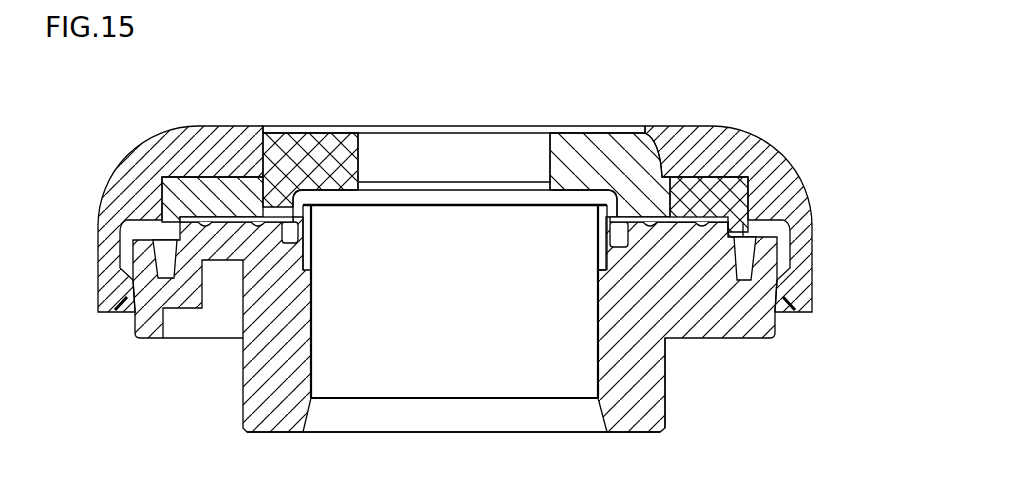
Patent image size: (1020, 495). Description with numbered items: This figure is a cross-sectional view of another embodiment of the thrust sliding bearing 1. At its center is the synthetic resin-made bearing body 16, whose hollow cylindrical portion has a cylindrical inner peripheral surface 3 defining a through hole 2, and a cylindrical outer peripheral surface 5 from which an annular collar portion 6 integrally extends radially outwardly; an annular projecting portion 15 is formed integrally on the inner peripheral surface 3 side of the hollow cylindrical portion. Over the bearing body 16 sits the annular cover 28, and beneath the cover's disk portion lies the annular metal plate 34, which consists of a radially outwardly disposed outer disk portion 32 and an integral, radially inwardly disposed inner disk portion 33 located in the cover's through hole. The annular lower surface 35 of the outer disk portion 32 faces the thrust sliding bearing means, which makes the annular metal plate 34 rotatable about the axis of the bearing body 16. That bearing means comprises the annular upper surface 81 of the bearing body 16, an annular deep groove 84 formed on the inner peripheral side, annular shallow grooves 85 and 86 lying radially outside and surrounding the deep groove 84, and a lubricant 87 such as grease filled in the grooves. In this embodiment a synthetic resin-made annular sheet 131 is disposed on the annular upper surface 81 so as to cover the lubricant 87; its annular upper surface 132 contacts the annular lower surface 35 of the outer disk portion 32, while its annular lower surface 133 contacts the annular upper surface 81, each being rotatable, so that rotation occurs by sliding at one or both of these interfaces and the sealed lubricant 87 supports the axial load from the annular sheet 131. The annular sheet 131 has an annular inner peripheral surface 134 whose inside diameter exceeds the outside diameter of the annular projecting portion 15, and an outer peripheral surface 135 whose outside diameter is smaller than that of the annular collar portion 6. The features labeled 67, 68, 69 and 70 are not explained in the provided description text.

The thrust sliding bearing 1 is at (674, 403).
The through hole 2 is at (433, 355).
The cylindrical inner peripheral surface 3 is at (312, 356).
The cylindrical outer peripheral surface 5 is at (666, 366).
The annular collar portion 6 is at (697, 285).
The annular projecting portion 15 is at (603, 210).
The bearing body 16 is at (238, 418).
The annular cover 28 is at (106, 186).
The outer disk portion 32 is at (180, 186).
The inner disk portion 33 is at (627, 155).
The annular metal plate 34 is at (589, 128).
The annular lower surface 35 is at (628, 234).
The inclined portion 67 is at (560, 135).
The inner sleeve 68 is at (326, 188).
The recess 69 is at (467, 160).
The step portion 70 is at (362, 160).
The annular upper surface 81 is at (651, 222).
The annular deep groove 84 is at (320, 175).
The annular shallow groove 85 is at (263, 228).
The annular shallow groove 86 is at (700, 180).
The lubricant 87 is at (205, 222).
The annular sheet 131 is at (703, 222).
The annular upper surface 132 is at (258, 222).
The annular lower surface 133 is at (650, 238).
The annular inner peripheral surface 134 is at (289, 236).
The outer peripheral surface 135 is at (757, 224).